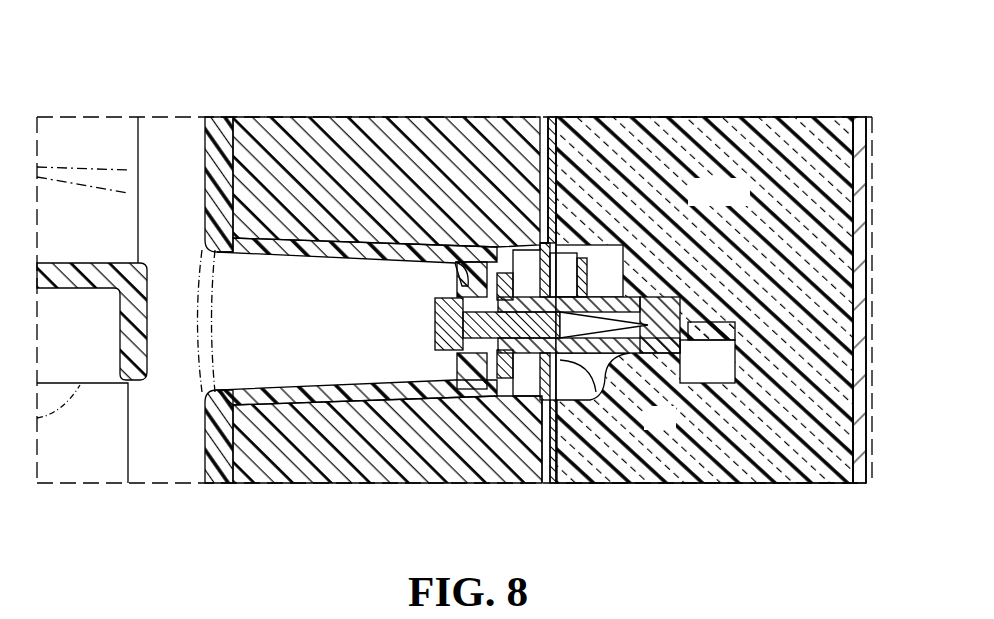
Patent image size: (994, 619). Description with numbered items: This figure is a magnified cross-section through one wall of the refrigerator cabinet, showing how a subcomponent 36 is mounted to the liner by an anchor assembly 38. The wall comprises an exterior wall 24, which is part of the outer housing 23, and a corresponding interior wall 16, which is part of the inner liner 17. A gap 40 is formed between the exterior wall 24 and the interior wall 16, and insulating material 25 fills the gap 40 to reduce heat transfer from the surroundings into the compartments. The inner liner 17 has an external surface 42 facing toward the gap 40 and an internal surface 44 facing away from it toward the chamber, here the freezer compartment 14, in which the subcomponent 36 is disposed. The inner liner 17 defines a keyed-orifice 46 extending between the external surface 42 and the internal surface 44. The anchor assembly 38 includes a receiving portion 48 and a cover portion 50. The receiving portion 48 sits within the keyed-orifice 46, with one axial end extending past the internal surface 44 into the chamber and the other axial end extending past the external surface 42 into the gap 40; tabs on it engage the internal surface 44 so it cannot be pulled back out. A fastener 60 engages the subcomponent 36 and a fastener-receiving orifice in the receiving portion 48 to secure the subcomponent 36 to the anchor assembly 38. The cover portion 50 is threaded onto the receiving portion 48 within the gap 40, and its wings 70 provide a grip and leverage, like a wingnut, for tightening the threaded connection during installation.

The freezer compartment 14 is at (90, 150).
The subcomponent 36 is at (192, 170).
The interior wall 16 is at (540, 126).
The inner liner 17 is at (544, 180).
The cover portion 50 is at (592, 175).
The insulating material 25 is at (746, 203).
The gap 40 is at (704, 300).
The exterior wall 24 is at (863, 160).
The outer housing 23 is at (859, 300).
The anchor assembly 38 is at (623, 290).
The wings 70 is at (713, 353).
The fastener 60 is at (433, 328).
The internal surface 44 is at (507, 257).
The receiving portion 48 is at (497, 245).
The keyed-orifice 46 is at (600, 385).
The external surface 42 is at (560, 440).